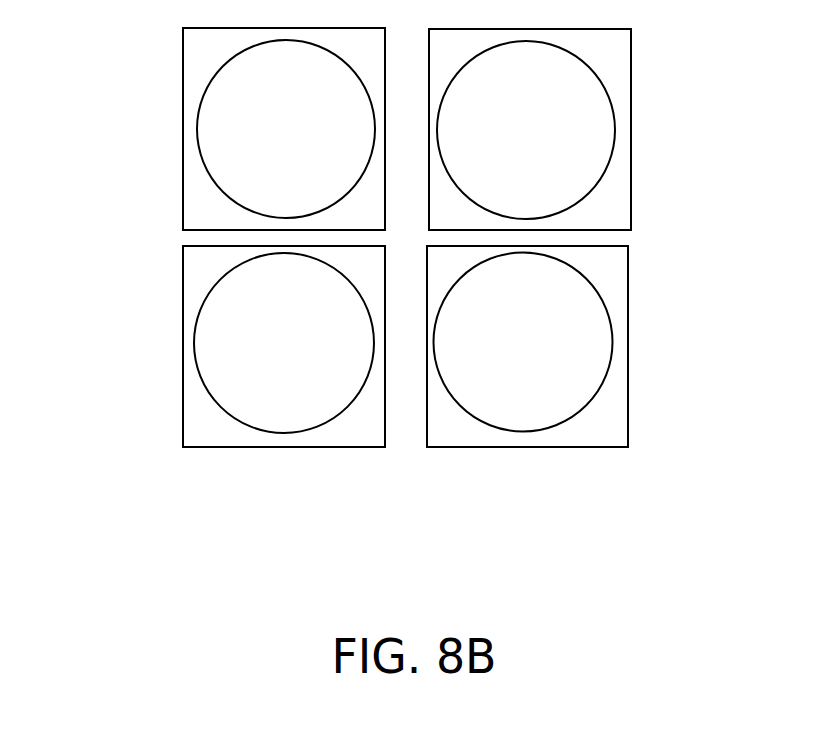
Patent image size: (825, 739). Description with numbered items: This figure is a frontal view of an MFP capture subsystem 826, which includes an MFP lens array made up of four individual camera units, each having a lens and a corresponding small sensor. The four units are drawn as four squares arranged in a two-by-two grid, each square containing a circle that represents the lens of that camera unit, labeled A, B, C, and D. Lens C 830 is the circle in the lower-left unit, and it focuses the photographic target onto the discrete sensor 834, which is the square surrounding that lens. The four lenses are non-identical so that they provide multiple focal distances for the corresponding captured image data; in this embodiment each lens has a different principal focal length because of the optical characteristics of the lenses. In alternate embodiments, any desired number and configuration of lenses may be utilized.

The MFP capture subsystem 826 is at (451, 305).
The lens C 830 is at (312, 393).
The discrete sensor 834 is at (193, 410).